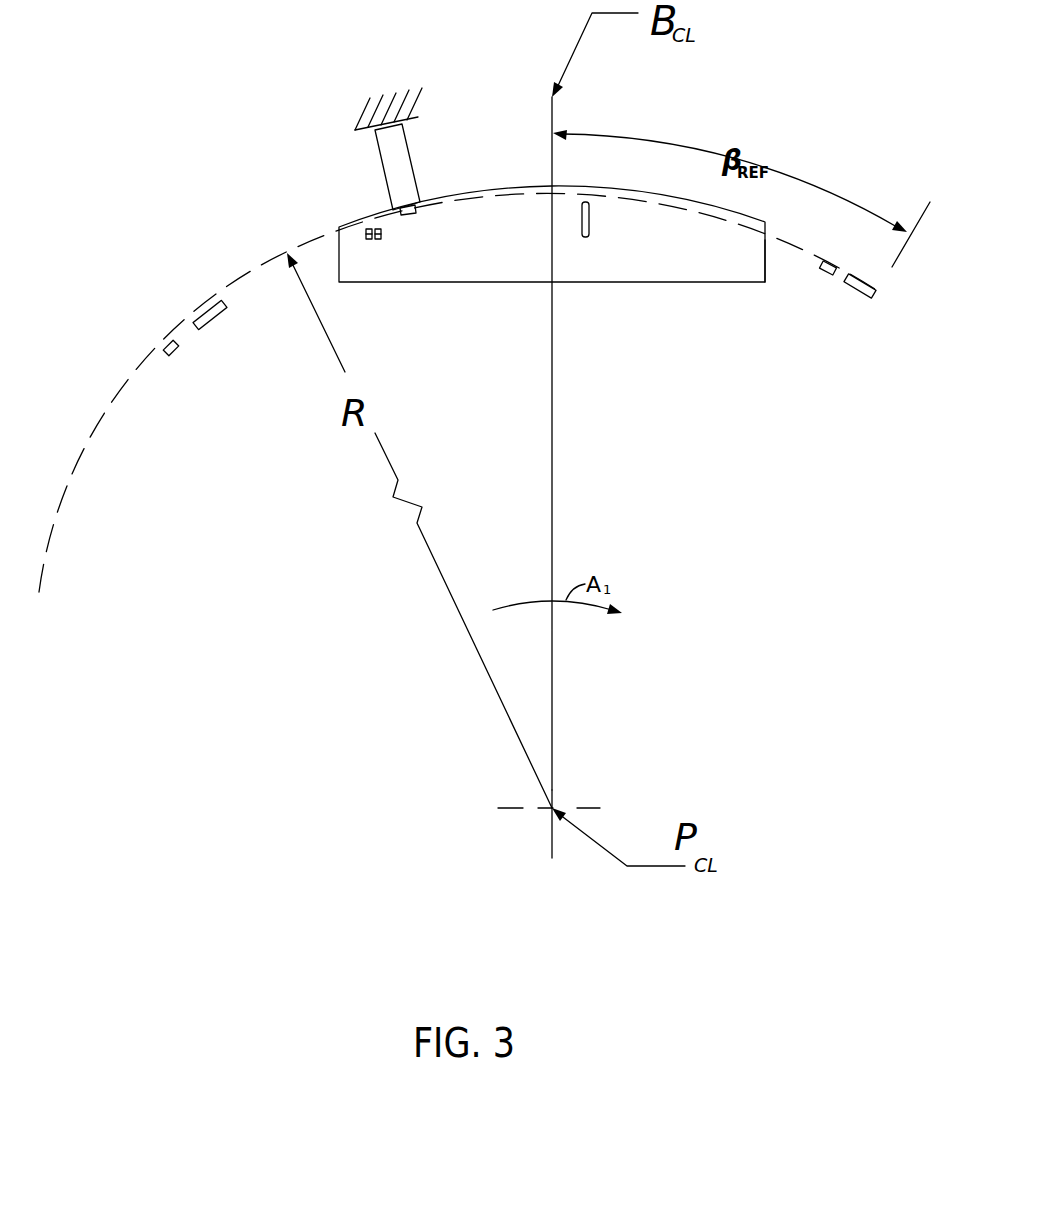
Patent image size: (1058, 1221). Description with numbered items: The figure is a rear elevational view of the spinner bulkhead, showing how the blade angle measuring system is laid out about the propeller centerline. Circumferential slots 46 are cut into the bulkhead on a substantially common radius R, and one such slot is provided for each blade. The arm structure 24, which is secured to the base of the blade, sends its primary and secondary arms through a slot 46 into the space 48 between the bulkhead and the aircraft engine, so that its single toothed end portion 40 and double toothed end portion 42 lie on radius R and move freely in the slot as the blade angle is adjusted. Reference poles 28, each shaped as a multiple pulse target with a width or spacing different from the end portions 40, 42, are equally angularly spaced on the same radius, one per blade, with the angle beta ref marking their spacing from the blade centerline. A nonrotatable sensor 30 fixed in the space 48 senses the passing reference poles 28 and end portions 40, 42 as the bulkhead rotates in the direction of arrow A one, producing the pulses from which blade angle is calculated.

The arm structure 24 is at (603, 380).
The reference poles 28 is at (201, 352).
The sensor 30 is at (370, 162).
The single toothed end portion 40 is at (596, 257).
The double toothed end portion 42 is at (386, 259).
The circumferential slots 46 is at (743, 290).
The space 48 is at (274, 228).